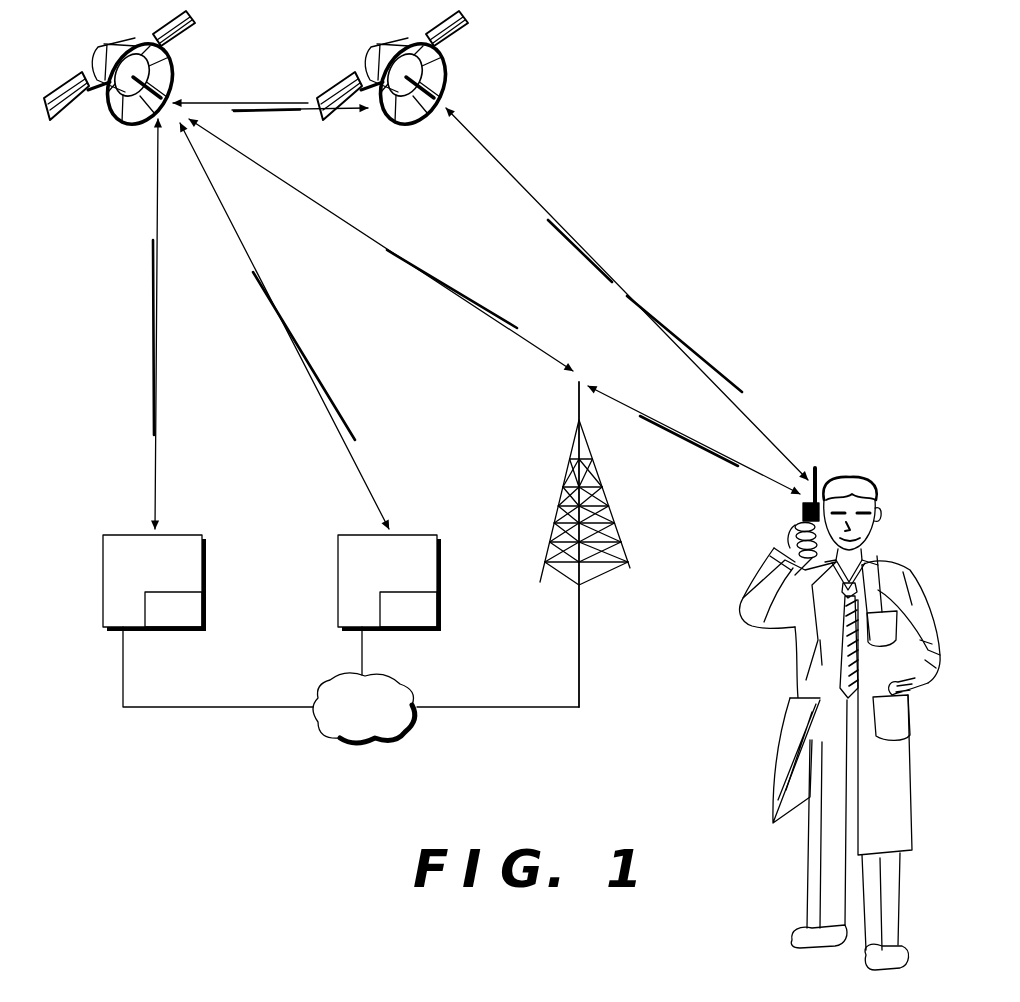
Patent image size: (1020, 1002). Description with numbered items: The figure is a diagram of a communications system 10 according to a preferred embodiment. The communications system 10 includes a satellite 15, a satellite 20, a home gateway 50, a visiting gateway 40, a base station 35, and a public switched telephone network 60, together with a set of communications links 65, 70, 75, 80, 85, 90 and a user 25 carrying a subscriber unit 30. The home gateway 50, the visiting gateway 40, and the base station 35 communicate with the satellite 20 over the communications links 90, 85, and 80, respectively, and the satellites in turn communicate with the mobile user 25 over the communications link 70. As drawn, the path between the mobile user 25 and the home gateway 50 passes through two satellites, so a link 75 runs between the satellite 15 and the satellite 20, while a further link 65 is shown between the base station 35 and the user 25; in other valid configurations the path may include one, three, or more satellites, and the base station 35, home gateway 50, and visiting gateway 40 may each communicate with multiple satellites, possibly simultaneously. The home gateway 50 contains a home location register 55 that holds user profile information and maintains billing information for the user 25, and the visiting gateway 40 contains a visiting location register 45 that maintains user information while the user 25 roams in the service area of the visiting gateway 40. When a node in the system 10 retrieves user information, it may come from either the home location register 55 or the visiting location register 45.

The communications system 10 is at (511, 798).
The satellite 15 is at (385, 46).
The satellite 20 is at (109, 49).
The user 25 is at (750, 591).
The subscriber unit 30 is at (795, 522).
The base station 35 is at (560, 490).
The visiting gateway 40 is at (436, 538).
The visiting location register 45 is at (435, 609).
The home gateway 50 is at (201, 538).
The home location register 55 is at (200, 609).
The public switched telephone network 60 is at (400, 701).
The communications link 65 is at (690, 442).
The communications link 70 is at (628, 272).
The communications link 75 is at (258, 113).
The communications link 80 is at (448, 286).
The communications link 85 is at (286, 320).
The communications link 90 is at (162, 300).